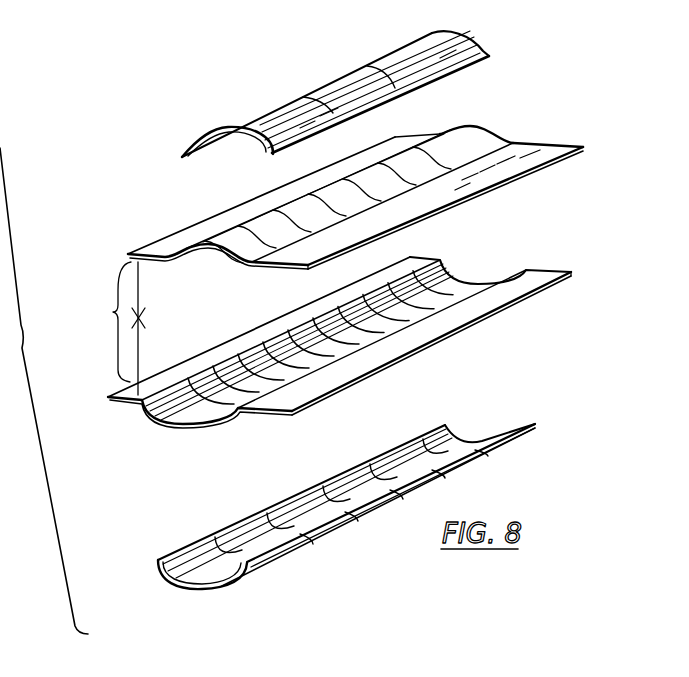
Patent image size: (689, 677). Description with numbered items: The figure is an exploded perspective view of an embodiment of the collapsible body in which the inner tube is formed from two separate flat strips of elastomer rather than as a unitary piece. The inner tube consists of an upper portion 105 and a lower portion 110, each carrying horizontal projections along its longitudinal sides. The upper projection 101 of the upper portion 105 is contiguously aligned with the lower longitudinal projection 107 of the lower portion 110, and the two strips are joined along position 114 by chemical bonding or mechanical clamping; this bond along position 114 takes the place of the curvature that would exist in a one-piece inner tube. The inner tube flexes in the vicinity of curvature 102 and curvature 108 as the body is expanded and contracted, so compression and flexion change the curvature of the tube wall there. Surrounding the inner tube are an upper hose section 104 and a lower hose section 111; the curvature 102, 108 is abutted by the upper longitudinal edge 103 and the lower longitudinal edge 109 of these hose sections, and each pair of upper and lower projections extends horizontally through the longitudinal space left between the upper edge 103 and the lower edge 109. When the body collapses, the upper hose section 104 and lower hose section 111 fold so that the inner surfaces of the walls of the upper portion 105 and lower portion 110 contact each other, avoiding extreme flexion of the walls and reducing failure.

The upper projection 101 is at (128, 254).
The curvature 102 is at (513, 143).
The upper longitudinal edge 103 is at (182, 157).
The upper hose section 104 is at (292, 103).
The upper portion of inner tube 105 is at (227, 233).
The lower longitudinal projection 107 is at (122, 406).
The curvature 108 is at (140, 412).
The lower longitudinal edge 109 is at (155, 560).
The lower portion of inner tube 110 is at (217, 430).
The lower hose section 111 is at (312, 546).
The joinder position 114 is at (113, 312).